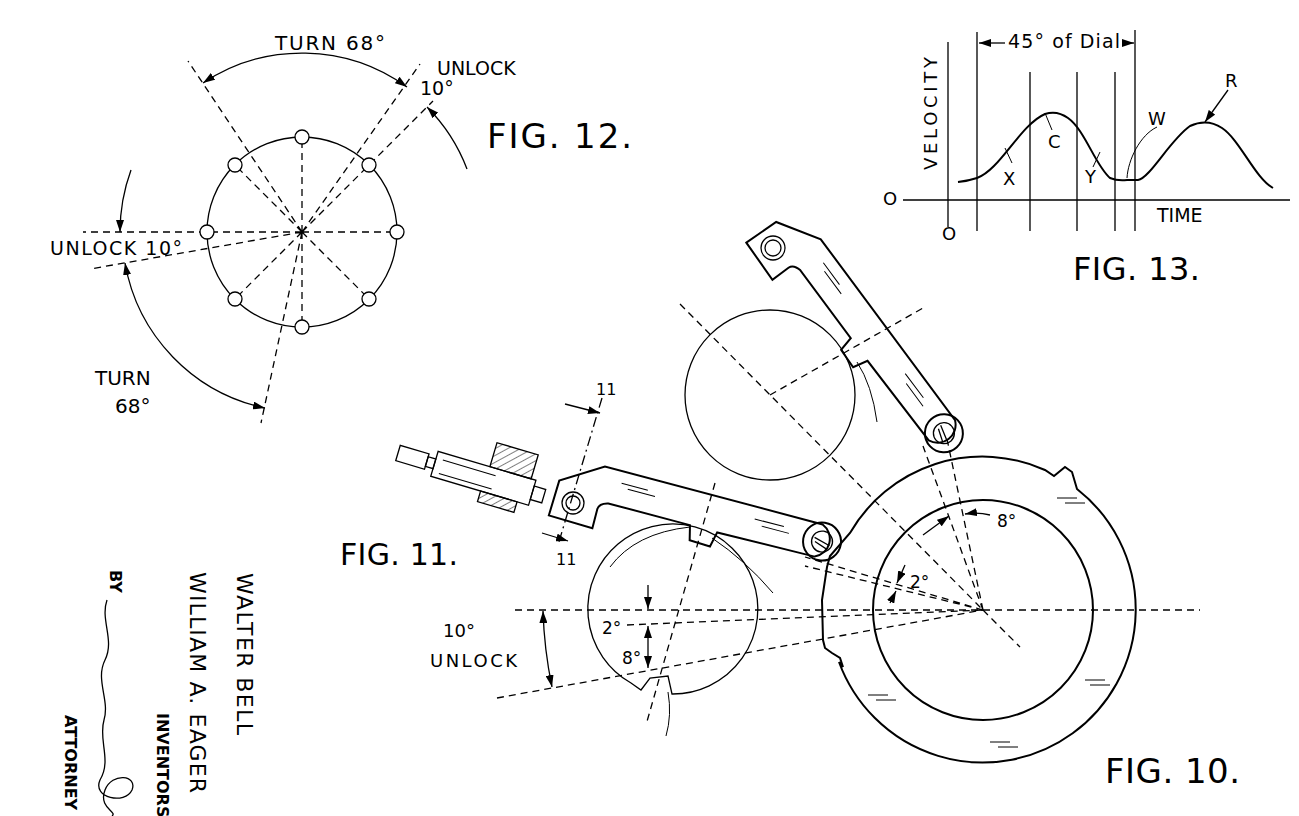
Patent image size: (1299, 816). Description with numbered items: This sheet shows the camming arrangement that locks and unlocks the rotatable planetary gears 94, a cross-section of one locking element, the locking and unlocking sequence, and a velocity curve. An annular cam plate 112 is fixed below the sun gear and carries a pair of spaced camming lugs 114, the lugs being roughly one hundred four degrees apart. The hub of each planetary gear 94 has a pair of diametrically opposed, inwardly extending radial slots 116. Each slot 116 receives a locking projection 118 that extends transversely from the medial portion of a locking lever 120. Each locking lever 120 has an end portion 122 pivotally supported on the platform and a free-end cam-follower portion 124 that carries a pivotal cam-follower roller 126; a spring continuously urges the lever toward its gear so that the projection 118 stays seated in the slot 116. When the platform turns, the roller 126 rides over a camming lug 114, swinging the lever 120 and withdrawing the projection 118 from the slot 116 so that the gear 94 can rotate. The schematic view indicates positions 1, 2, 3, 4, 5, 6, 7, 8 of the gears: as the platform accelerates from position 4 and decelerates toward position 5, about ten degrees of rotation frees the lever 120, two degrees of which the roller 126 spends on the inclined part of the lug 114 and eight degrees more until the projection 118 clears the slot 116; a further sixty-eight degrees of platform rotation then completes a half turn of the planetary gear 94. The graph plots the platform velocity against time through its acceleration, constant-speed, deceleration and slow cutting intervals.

In FIG. 12, the position 1 is at (302, 340).
In FIG. 12, the position 2 is at (375, 309).
In FIG. 12, the position 3 is at (409, 236).
In FIG. 12, the position 4 is at (380, 169).
In FIG. 12, the position 5 is at (301, 123).
In FIG. 12, the position 6 is at (224, 163).
In FIG. 12, the position 7 is at (197, 222).
In FIG. 12, the position 8 is at (232, 312).
In FIG. 10, the planetary gear 94 is at (718, 328).
In FIG. 10, the annular cam plate 112 is at (1147, 573).
In FIG. 10, the camming lug 114 is at (1112, 503).
In FIG. 10, the radial slot 116 is at (733, 647).
In FIG. 10, the locking projection 118 is at (610, 567).
In FIG. 11, the locking lever 120 is at (512, 442).
In FIG. 10, the locking lever 120 is at (657, 493).
In FIG. 11, the end portion 122 is at (445, 453).
In FIG. 10, the end portion 122 is at (560, 516).
In FIG. 10, the cam-follower portion 124 is at (742, 504).
In FIG. 10, the cam-follower roller 126 is at (855, 514).